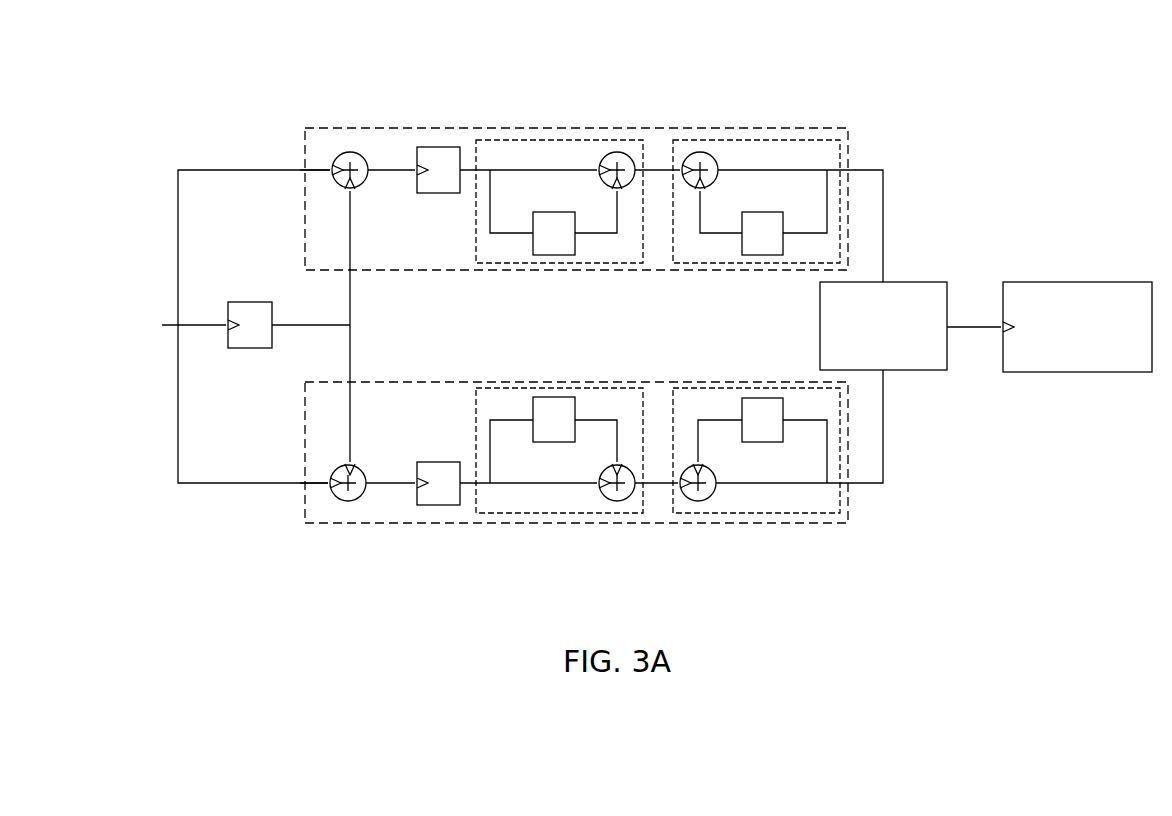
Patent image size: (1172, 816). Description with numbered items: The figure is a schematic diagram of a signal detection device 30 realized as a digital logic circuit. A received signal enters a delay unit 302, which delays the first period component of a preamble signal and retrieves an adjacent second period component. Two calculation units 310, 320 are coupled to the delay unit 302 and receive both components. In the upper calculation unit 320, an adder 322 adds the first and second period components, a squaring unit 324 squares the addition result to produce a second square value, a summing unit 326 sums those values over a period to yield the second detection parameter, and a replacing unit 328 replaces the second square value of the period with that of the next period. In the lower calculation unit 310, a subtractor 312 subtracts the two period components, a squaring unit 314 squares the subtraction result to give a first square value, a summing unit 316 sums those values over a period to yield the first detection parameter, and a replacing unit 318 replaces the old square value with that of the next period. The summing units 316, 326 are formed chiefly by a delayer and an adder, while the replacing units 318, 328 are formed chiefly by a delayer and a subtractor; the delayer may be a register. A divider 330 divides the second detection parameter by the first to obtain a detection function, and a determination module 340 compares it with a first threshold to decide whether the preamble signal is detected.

The signal detection device 30 is at (998, 93).
The delay unit 302 is at (252, 302).
The calculation unit 310 is at (652, 382).
The subtractor 312 is at (350, 523).
The squaring unit 314 is at (438, 462).
The summing unit 316 is at (786, 513).
The replacing unit 318 is at (558, 513).
The calculation unit 320 is at (652, 128).
The adder 322 is at (350, 150).
The squaring unit 324 is at (438, 147).
The summing unit 326 is at (762, 140).
The replacing unit 328 is at (555, 140).
The divider 330 is at (937, 282).
The determination module 340 is at (1068, 282).